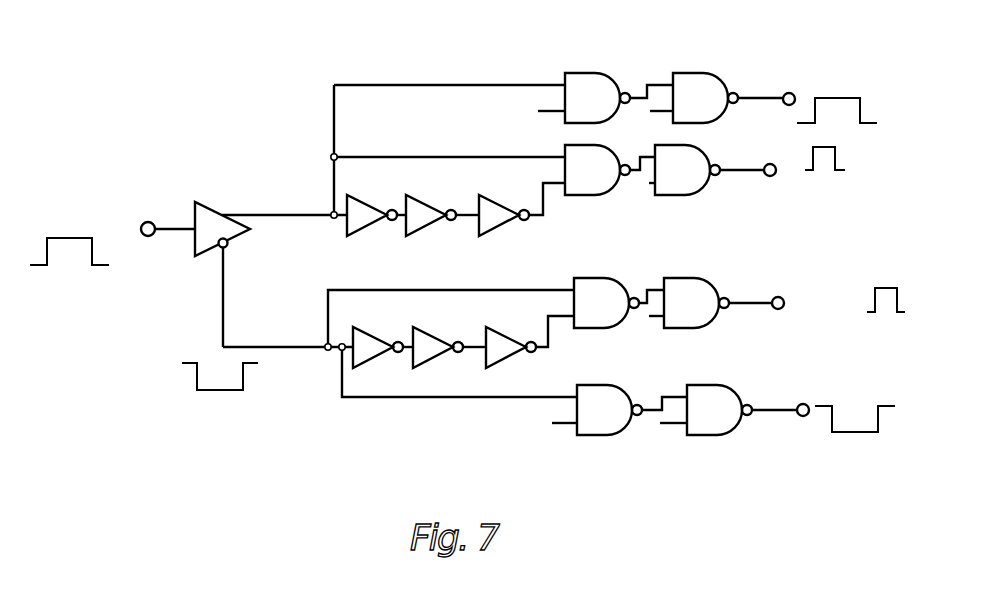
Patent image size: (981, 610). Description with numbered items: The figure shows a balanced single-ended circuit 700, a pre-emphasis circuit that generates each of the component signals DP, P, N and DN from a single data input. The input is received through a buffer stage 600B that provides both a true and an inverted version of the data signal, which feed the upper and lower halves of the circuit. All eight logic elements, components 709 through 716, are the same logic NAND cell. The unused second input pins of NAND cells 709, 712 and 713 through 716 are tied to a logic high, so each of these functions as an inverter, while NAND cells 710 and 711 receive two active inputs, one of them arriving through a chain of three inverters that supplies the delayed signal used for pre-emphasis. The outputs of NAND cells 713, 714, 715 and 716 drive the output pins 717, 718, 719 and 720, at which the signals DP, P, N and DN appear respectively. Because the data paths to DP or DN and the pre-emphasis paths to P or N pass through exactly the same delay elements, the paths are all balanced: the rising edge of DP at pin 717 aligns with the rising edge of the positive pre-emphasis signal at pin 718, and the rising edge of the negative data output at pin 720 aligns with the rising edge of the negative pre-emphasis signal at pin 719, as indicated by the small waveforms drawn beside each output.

The balanced single-ended circuit 700 is at (469, 31).
The buffer with inverted output 600B is at (211, 231).
The NAND cell 709 is at (610, 110).
The NAND cell 710 is at (610, 182).
The NAND cell 711 is at (619, 315).
The NAND cell 712 is at (622, 422).
The NAND cell 713 is at (718, 110).
The NAND cell 714 is at (700, 182).
The NAND cell 715 is at (709, 315).
The NAND cell 716 is at (732, 422).
The DP output terminal 717 is at (794, 94).
The P output terminal 718 is at (770, 177).
The N output terminal 719 is at (783, 297).
The DN output terminal 720 is at (808, 404).